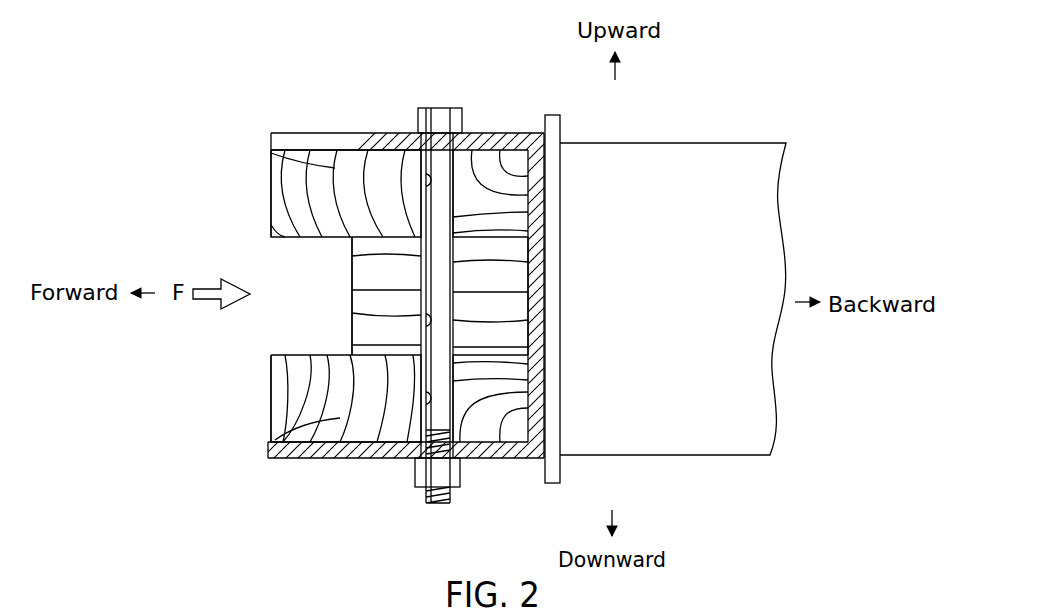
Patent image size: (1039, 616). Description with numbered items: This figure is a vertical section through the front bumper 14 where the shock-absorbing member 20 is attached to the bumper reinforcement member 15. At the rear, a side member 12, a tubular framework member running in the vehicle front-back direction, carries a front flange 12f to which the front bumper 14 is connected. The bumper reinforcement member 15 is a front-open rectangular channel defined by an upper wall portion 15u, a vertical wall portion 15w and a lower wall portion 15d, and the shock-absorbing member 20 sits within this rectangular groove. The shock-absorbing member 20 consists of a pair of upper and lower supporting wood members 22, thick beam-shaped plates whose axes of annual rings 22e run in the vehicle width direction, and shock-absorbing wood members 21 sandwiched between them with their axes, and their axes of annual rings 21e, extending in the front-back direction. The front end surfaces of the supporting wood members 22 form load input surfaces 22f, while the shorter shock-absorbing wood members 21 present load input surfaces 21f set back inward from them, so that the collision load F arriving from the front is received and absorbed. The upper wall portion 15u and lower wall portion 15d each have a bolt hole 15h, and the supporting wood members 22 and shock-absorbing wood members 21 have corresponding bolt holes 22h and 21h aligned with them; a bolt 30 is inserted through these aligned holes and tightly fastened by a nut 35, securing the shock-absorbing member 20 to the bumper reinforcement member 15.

The side member 12 is at (683, 186).
The front flange 12f is at (550, 115).
The front bumper 14 is at (497, 108).
The bumper reinforcement member 15 is at (352, 131).
The upper wall portion 15u is at (298, 133).
The lower wall portion 15d is at (327, 452).
The vertical wall portion 15w is at (547, 222).
The bolt hole 15h is at (440, 108).
The shock-absorbing member 20 is at (256, 235).
The shock-absorbing wood member 21 is at (365, 273).
The load input surface 21f is at (352, 303).
The bolt hole 21h is at (428, 322).
The axis of annual rings 21e is at (522, 302).
The supporting wood member 22 is at (300, 177).
The axis of annual rings 22e is at (271, 142).
The load input surface 22f is at (270, 210).
The bolt hole 22h is at (428, 180).
The bolt 30 is at (416, 106).
The nut 35 is at (454, 476).